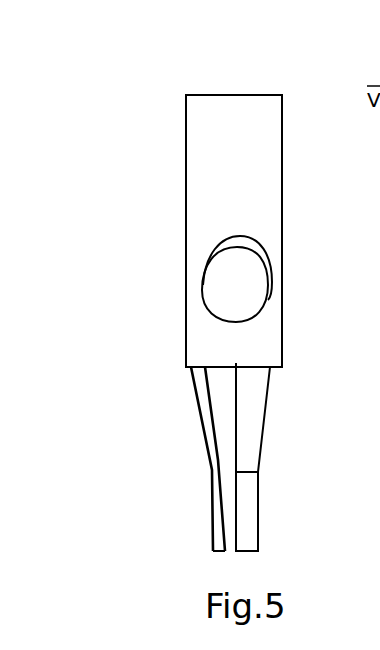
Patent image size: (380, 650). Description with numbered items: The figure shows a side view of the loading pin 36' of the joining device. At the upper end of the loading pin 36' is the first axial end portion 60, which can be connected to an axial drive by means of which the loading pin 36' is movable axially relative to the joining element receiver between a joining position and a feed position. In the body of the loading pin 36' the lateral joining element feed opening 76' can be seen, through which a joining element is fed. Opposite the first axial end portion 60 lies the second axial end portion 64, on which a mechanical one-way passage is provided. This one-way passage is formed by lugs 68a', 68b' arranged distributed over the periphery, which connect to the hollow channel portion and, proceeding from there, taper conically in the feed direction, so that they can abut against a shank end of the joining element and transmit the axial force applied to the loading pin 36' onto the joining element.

The first axial end portion 60 is at (248, 110).
The loading pin 36' is at (168, 231).
The lateral joining element feed opening 76' is at (161, 279).
The second axial end portion 64 is at (187, 392).
The lug 68a' is at (130, 459).
The lug 68b' is at (305, 457).